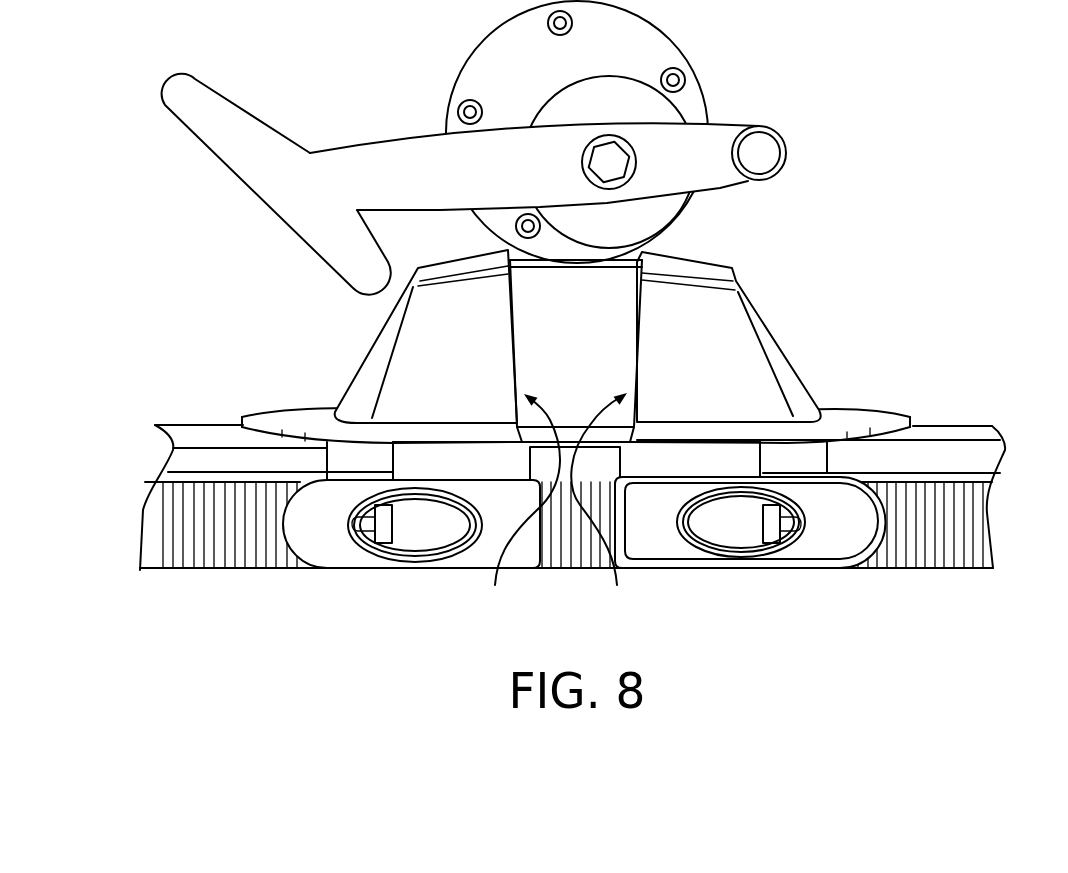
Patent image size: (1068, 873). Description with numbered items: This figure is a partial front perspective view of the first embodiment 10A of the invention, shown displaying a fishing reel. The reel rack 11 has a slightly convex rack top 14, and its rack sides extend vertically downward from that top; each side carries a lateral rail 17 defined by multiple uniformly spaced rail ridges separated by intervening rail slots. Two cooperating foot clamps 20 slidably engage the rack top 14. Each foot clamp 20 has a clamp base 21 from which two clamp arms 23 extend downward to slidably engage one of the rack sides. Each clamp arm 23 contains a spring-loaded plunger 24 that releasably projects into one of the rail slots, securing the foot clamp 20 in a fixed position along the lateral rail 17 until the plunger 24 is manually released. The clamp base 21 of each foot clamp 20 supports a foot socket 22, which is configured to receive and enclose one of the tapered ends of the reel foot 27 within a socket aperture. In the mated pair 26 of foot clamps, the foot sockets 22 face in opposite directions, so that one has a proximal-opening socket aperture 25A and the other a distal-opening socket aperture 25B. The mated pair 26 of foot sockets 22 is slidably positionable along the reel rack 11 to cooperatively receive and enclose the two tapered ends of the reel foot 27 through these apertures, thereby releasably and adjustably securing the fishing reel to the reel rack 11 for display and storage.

The first embodiment 10A is at (932, 218).
The reel rack 11 is at (1005, 415).
The rack top 14 is at (939, 424).
The lateral rail 17 is at (907, 578).
The foot clamp 20 is at (596, 269).
The clamp base 21 is at (312, 415).
The foot socket 22 is at (477, 256).
The clamp arm 23 is at (490, 541).
The spring-loaded plunger 24 is at (418, 527).
The proximal-opening socket aperture 25A is at (515, 509).
The distal-opening socket aperture 25B is at (604, 513).
The mated pair of foot clamps 26 is at (624, 333).
The reel foot 27 is at (528, 262).